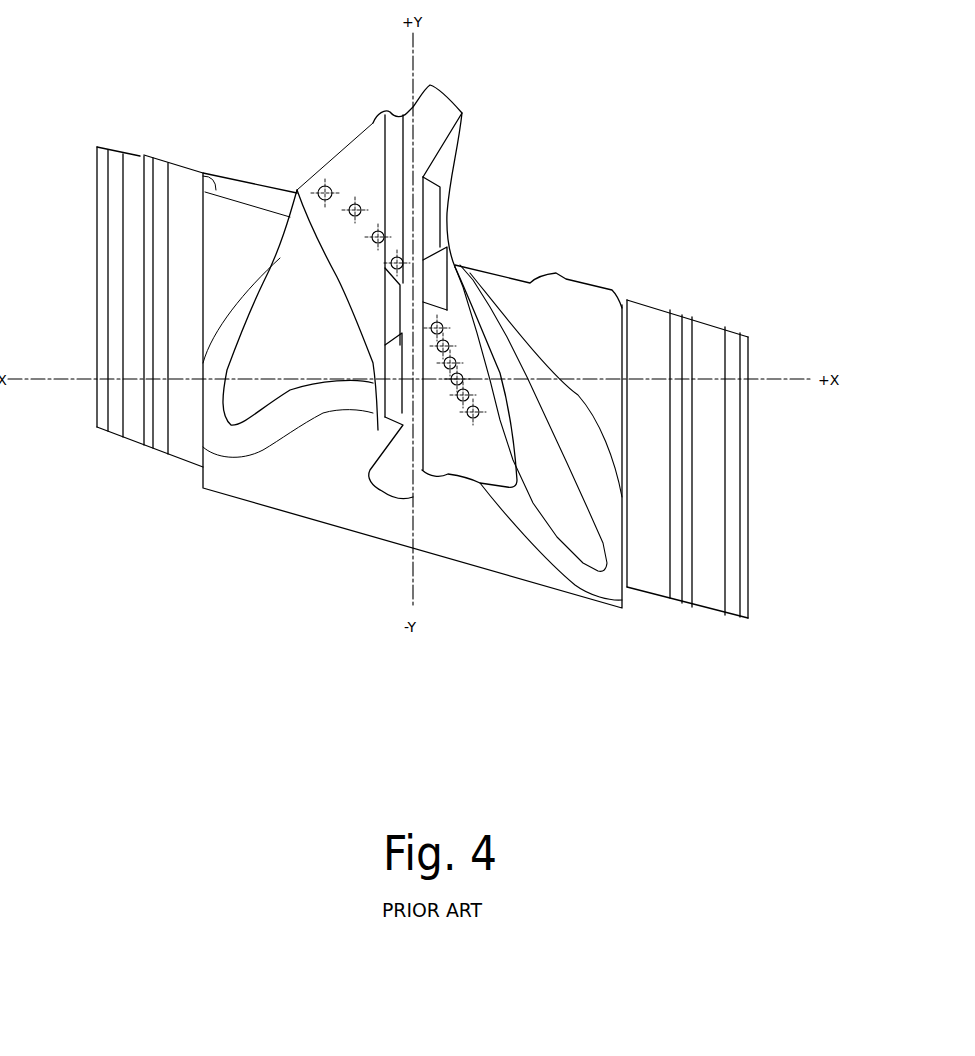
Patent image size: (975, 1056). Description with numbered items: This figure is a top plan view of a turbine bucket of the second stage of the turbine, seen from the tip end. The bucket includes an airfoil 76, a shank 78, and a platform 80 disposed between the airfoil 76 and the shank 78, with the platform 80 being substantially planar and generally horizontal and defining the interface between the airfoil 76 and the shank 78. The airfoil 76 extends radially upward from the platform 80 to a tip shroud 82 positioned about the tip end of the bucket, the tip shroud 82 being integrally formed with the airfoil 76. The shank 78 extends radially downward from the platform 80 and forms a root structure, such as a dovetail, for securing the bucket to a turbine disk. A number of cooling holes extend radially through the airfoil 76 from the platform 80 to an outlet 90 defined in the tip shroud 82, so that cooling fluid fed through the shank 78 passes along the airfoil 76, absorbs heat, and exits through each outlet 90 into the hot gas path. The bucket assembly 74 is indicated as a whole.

The prior art rotor blade assembly 74 is at (156, 66).
The airfoil 76 is at (305, 262).
The shank 78 is at (645, 318).
The platform 80 is at (545, 303).
The tip shroud 82 is at (377, 127).
The outlet 90 is at (378, 230).